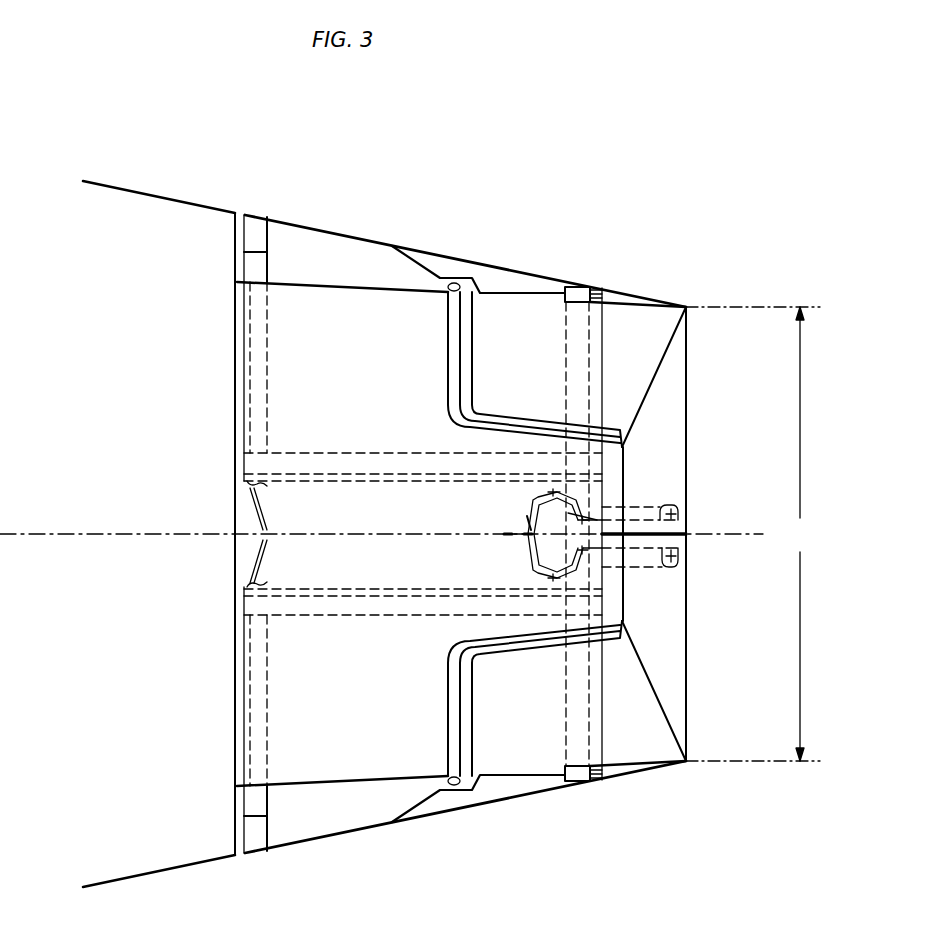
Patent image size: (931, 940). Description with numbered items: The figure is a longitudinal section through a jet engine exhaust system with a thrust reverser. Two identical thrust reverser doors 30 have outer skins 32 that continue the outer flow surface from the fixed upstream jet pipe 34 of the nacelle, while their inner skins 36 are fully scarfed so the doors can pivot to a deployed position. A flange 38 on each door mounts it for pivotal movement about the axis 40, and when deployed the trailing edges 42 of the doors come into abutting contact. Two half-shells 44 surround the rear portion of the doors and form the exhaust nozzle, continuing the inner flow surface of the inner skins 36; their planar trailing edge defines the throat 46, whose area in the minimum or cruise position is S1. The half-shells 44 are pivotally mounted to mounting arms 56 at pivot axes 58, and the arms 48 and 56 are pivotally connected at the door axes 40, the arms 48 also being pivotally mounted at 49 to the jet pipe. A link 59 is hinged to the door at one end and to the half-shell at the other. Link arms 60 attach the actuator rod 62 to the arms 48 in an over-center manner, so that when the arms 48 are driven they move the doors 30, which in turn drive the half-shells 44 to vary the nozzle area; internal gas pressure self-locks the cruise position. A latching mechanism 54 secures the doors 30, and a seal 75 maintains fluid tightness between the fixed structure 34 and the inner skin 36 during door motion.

The thrust reverser door 30 is at (237, 403).
The outer skin 32 is at (455, 255).
The jet pipe 34 is at (178, 199).
The inner skin 36 is at (493, 300).
The flange 38 is at (592, 495).
The pivot axis 40 is at (602, 517).
The trailing edge 42 is at (660, 363).
The half-shell 44 is at (640, 293).
The throat 46 is at (687, 307).
The arm 48 is at (575, 513).
The pivot mounting 49 is at (597, 520).
The latching mechanism 54 is at (265, 570).
The mounting arm 56 is at (660, 507).
The pivot axis 58 is at (676, 520).
The link 59 is at (602, 287).
The link arm 60 is at (527, 523).
The actuator rod 62 is at (505, 537).
The seal 75 is at (462, 282).
The throat area S1 is at (753, 534).